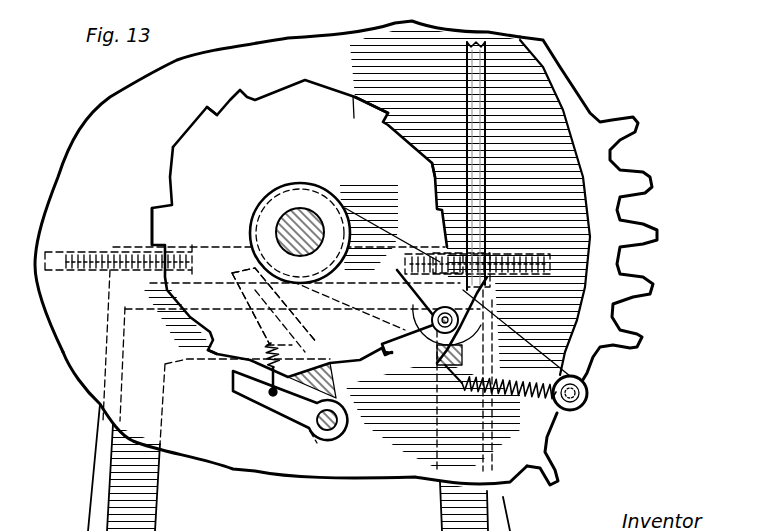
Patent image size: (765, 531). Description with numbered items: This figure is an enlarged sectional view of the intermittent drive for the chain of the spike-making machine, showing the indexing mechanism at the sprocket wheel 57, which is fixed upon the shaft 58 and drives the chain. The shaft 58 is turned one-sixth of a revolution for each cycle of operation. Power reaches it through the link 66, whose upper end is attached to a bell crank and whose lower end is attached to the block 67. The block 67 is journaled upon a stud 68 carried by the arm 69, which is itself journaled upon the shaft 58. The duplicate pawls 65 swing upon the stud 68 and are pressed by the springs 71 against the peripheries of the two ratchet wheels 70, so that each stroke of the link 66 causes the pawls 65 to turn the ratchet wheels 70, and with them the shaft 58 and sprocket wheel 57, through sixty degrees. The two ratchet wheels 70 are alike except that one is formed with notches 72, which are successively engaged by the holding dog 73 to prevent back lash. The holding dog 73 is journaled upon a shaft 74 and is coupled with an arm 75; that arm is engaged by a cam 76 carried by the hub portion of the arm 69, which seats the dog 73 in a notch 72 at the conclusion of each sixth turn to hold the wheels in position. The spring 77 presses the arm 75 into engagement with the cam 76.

The sprocket wheel 57 is at (600, 169).
The shaft 58 is at (290, 205).
The pawls 65 is at (437, 248).
The link 66 is at (478, 140).
The block 67 is at (537, 287).
The stud 68 is at (415, 354).
The arm 69 is at (503, 333).
The ratchet wheels 70 is at (315, 97).
The springs 71 is at (507, 380).
The notches 72 is at (213, 117).
The holding dog 73 is at (258, 393).
The shaft 74 is at (327, 437).
The arm 75 is at (290, 333).
The cam 76 is at (270, 268).
The spring 77 is at (247, 304).